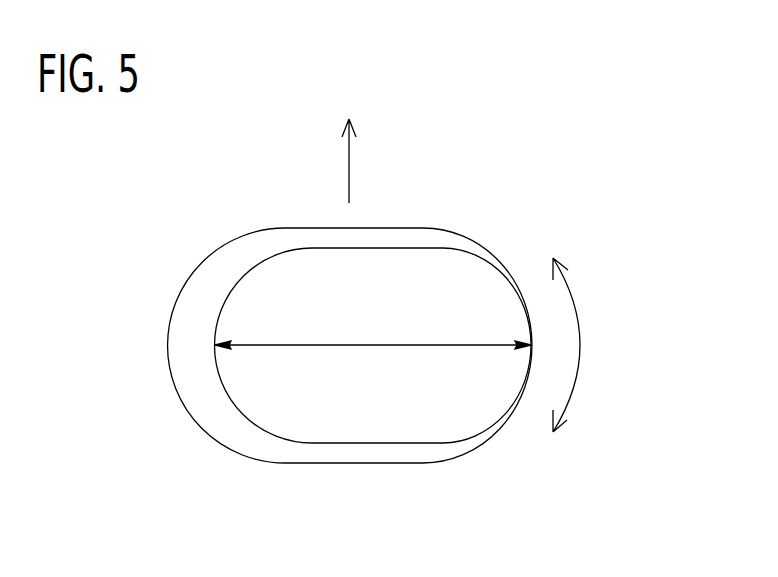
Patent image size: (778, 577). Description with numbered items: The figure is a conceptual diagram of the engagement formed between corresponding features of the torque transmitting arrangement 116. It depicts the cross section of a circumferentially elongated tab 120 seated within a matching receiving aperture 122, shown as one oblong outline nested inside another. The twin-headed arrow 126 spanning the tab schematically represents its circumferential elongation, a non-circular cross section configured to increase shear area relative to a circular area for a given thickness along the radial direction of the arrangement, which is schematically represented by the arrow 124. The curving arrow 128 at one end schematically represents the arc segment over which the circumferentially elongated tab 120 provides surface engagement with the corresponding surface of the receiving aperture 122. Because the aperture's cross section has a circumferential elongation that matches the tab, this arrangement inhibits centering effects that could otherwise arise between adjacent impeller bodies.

The torque transmitting arrangement 116 is at (189, 241).
The circumferentially elongated tab 120 is at (373, 427).
The receiving aperture 122 is at (218, 425).
The arrow 124 is at (349, 168).
The twin-headed arrow 126 is at (372, 345).
The curving arrow 128 is at (580, 345).